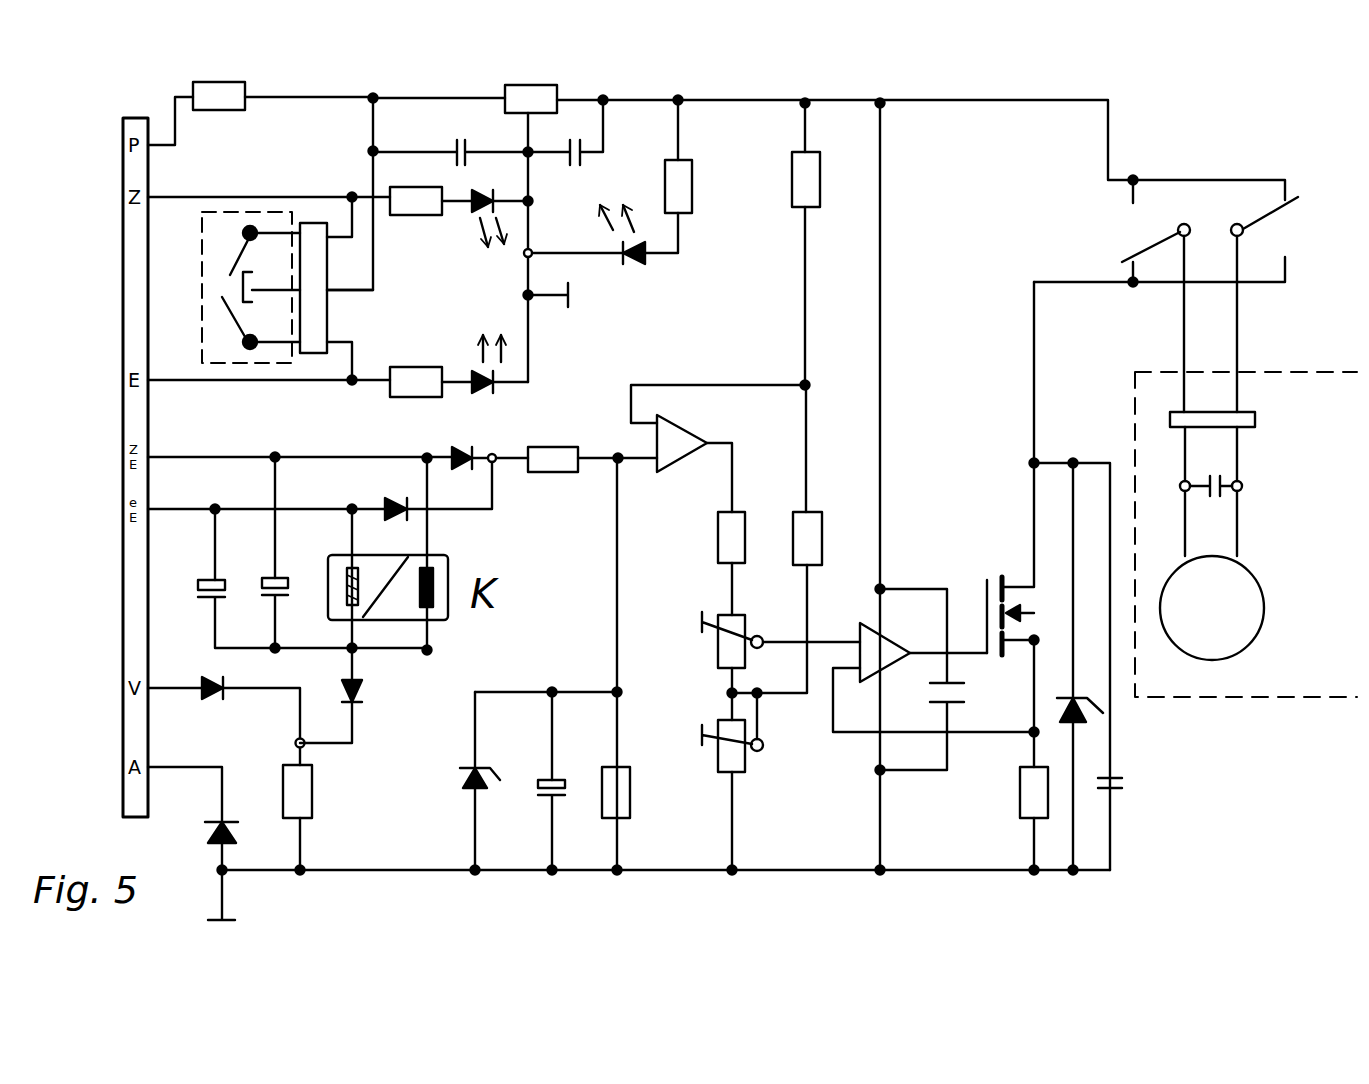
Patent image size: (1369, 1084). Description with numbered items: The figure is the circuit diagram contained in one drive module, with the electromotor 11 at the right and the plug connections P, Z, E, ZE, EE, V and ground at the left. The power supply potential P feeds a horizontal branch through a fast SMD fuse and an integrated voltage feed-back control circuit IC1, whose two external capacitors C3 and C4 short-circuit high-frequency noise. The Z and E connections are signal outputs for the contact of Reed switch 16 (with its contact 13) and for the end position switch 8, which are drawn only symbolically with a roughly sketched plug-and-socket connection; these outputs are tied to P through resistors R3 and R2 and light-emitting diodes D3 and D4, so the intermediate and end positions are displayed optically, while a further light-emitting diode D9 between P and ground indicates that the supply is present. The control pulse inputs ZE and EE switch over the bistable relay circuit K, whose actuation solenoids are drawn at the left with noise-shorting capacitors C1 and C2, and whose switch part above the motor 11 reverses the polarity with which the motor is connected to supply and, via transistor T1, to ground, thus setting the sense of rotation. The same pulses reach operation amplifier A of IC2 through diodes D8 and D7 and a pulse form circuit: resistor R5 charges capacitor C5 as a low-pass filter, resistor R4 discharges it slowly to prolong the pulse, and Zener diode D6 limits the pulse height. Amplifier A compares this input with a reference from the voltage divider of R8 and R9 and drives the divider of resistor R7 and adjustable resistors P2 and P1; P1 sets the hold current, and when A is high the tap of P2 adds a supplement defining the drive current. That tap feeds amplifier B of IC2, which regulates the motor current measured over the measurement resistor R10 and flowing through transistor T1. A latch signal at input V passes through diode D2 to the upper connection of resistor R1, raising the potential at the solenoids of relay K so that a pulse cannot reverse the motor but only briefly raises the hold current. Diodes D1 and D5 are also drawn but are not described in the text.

The electromotor 11 is at (1212, 608).
The relay contact terminal 13 is at (281, 236).
The Reed switch 16 is at (289, 275).
The end position switch 8 is at (280, 338).
The bistable relay circuit K is at (1166, 209).
The integrated voltage feed-back control circuit IC1 is at (531, 84).
The IC with operation amplifiers A and B IC2 is at (822, 536).
The transistor T1 is at (1010, 468).
The resistor R1 is at (313, 809).
The resistor R2 is at (416, 369).
The resistor R3 is at (416, 188).
The resistor R4 is at (632, 792).
The resistor R5 is at (573, 445).
The resistor R7 is at (717, 563).
The resistor of voltage divider circuit R8 is at (793, 539).
The resistor of voltage divider circuit R9 is at (822, 244).
The measurement resistor R10 is at (1015, 755).
The adjustable resistor P1 is at (725, 781).
The adjustable resistor P2 is at (777, 666).
The capacitor C1 is at (286, 552).
The capacitor C2 is at (236, 578).
The external capacitor C3 is at (450, 141).
The external capacitor C4 is at (565, 132).
The capacitor C5 is at (540, 781).
The diode D1 is at (204, 871).
The diode D2 is at (244, 695).
The light-emitting diode D3 is at (485, 375).
The light-emitting diode D4 is at (485, 205).
The zener diode D5 is at (347, 711).
The Zener diode D6 is at (461, 781).
The diode D7 is at (435, 491).
The diode D8 is at (476, 446).
The light-emitting diode D9 is at (586, 252).